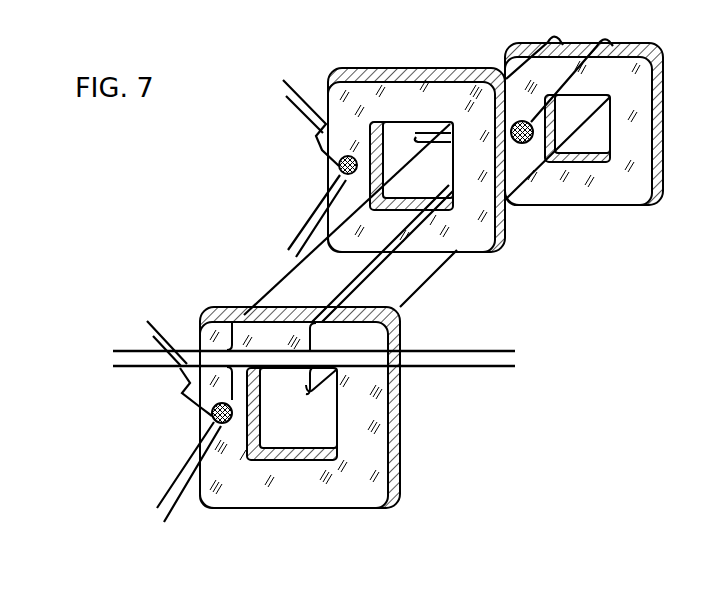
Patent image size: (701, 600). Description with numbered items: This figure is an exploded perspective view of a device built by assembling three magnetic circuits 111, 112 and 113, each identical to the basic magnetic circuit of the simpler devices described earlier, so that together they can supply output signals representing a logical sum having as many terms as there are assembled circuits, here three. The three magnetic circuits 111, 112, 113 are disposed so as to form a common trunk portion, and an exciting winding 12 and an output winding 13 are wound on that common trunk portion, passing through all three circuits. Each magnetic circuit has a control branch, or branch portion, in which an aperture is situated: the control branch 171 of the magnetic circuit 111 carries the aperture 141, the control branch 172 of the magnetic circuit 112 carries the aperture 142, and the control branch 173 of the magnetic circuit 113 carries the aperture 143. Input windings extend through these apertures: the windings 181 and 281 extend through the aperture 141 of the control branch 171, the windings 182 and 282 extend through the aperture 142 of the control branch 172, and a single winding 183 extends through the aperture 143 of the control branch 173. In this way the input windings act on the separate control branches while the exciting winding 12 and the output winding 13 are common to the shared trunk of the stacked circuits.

The exciting winding 12 is at (284, 279).
The output winding 13 is at (426, 283).
The magnetic circuit 111 is at (393, 472).
The magnetic circuit 112 is at (381, 68).
The magnetic circuit 113 is at (631, 43).
The aperture 141 is at (210, 421).
The aperture 142 is at (338, 171).
The aperture 143 is at (522, 144).
The control branch 171 is at (254, 424).
The control branch 172 is at (384, 181).
The control branch 173 is at (541, 113).
The winding 181 is at (156, 329).
The winding 182 is at (296, 93).
The winding 183 is at (418, 150).
The winding 281 is at (169, 505).
The winding 282 is at (300, 229).